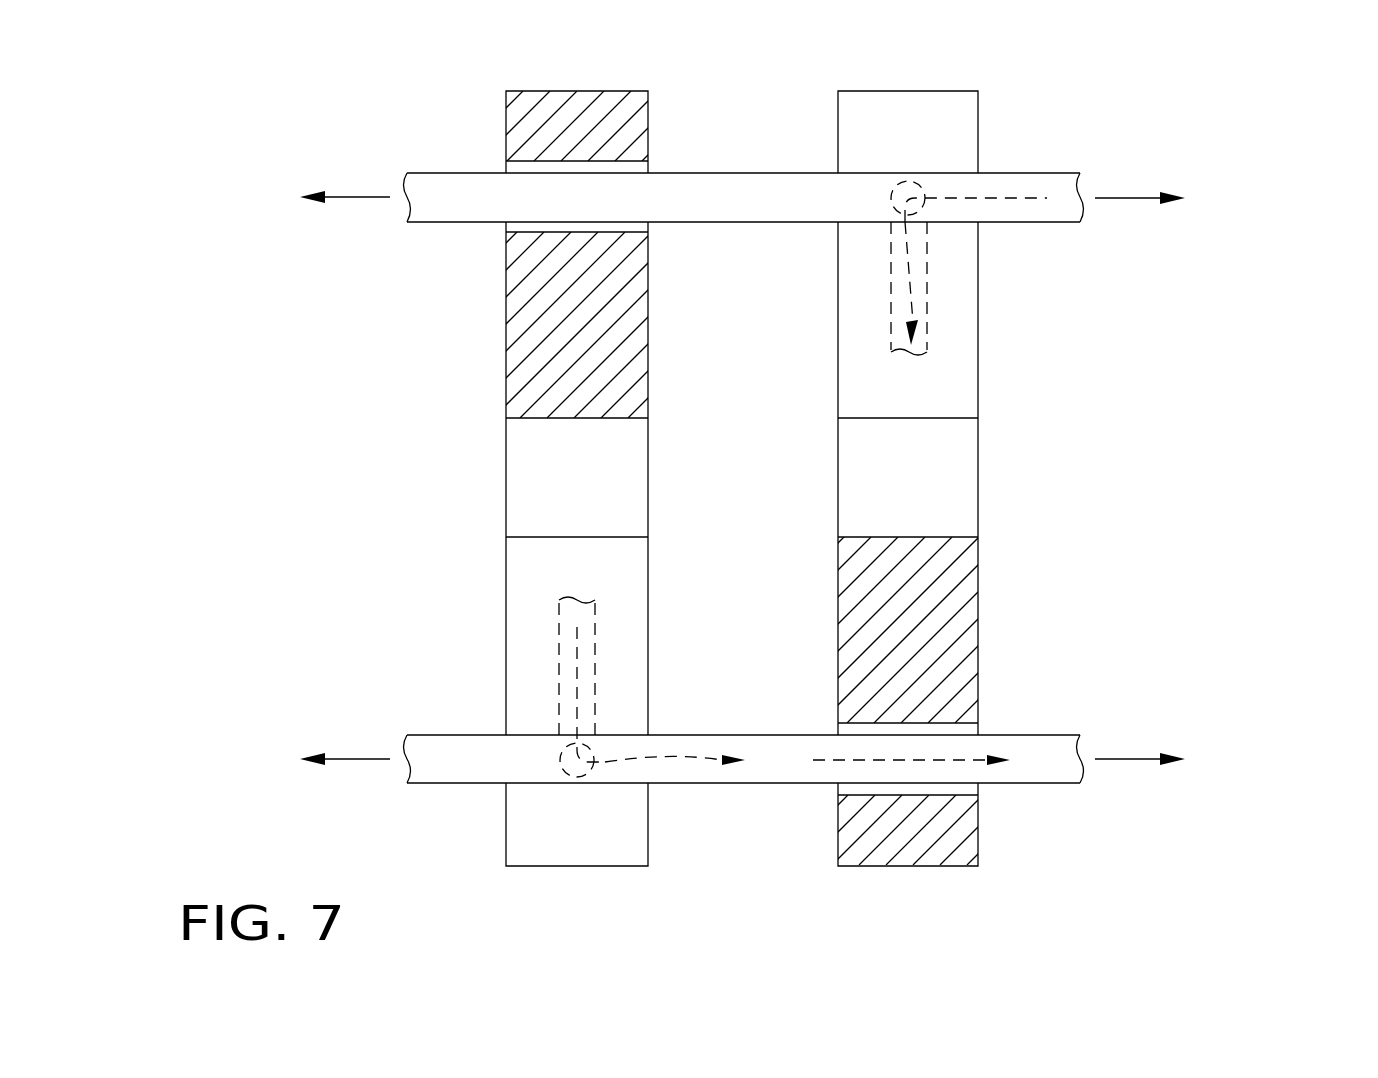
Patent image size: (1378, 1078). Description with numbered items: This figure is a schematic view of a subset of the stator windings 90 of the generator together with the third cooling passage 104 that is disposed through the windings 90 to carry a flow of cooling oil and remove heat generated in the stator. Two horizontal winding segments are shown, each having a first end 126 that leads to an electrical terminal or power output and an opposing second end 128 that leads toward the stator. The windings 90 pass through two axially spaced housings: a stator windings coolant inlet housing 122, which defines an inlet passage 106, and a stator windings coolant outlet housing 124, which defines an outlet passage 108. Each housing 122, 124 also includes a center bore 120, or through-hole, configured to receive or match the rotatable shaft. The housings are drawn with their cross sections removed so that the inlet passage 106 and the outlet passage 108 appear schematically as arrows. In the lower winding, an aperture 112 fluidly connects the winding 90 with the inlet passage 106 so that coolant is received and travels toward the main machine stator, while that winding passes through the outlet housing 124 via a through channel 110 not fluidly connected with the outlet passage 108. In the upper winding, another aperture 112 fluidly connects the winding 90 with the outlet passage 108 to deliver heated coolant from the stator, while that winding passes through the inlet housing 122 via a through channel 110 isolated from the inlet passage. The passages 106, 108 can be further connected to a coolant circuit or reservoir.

The stator windings 90 is at (731, 469).
The third cooling passage 104 is at (1042, 70).
The inlet passage 106 is at (558, 665).
The outlet passage 108 is at (927, 320).
The through channel 110 is at (503, 162).
The aperture 112 is at (908, 182).
The center bore 120 is at (503, 504).
The stator windings coolant inlet housing 122 is at (592, 852).
The stator windings coolant outlet housing 124 is at (885, 848).
The first end 126 is at (400, 792).
The second end 128 is at (398, 166).